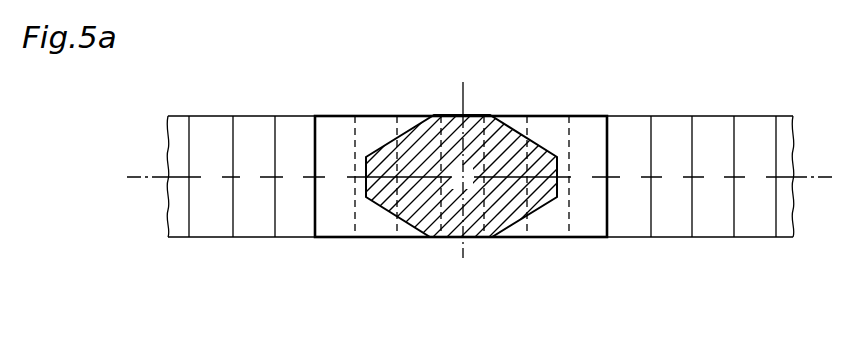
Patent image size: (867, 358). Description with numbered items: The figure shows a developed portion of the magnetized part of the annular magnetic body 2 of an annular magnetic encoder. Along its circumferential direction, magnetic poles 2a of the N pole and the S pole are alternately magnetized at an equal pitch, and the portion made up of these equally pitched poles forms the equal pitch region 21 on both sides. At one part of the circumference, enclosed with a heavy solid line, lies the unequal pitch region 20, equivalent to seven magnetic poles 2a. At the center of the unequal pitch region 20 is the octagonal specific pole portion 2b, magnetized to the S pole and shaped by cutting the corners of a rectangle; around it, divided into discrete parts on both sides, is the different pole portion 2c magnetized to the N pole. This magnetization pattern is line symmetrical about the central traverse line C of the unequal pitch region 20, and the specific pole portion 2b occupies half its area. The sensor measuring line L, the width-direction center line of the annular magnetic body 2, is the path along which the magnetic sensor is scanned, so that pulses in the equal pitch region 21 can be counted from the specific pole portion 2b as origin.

The annular magnetic body 2 is at (716, 108).
The magnetic poles 2a is at (281, 118).
The specific pole portion 2b is at (457, 238).
The different pole portion 2c is at (355, 239).
The unequal pitch region 20 is at (527, 287).
The equal pitch region 21 is at (314, 243).
The central traverse line C is at (463, 96).
The sensor measuring line L is at (810, 176).